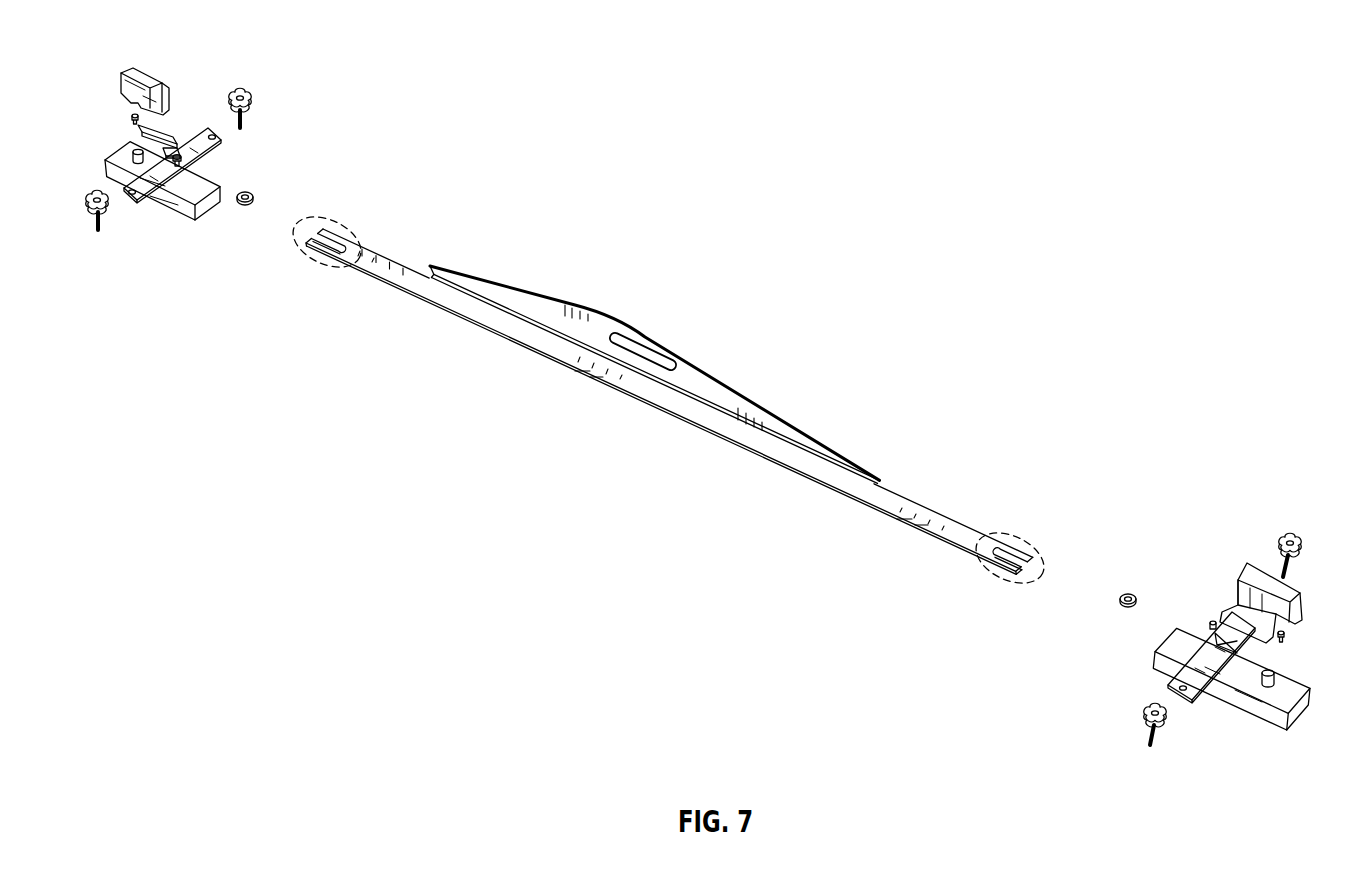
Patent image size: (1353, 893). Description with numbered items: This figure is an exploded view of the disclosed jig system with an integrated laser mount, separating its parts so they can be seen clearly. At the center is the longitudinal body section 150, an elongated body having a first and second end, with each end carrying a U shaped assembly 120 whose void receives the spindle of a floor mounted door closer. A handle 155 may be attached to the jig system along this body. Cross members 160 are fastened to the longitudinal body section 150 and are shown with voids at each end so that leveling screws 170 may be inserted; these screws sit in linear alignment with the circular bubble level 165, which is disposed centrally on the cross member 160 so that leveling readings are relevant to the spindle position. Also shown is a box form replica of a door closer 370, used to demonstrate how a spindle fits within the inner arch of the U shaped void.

The U shaped assembly 120 is at (339, 218).
The longitudinal body section 150 is at (635, 345).
The handle 155 is at (665, 338).
The cross member 160 is at (1208, 645).
The circular bubble level 165 is at (247, 192).
The leveling screws 170 is at (246, 86).
The door closer replica 370 is at (1298, 688).